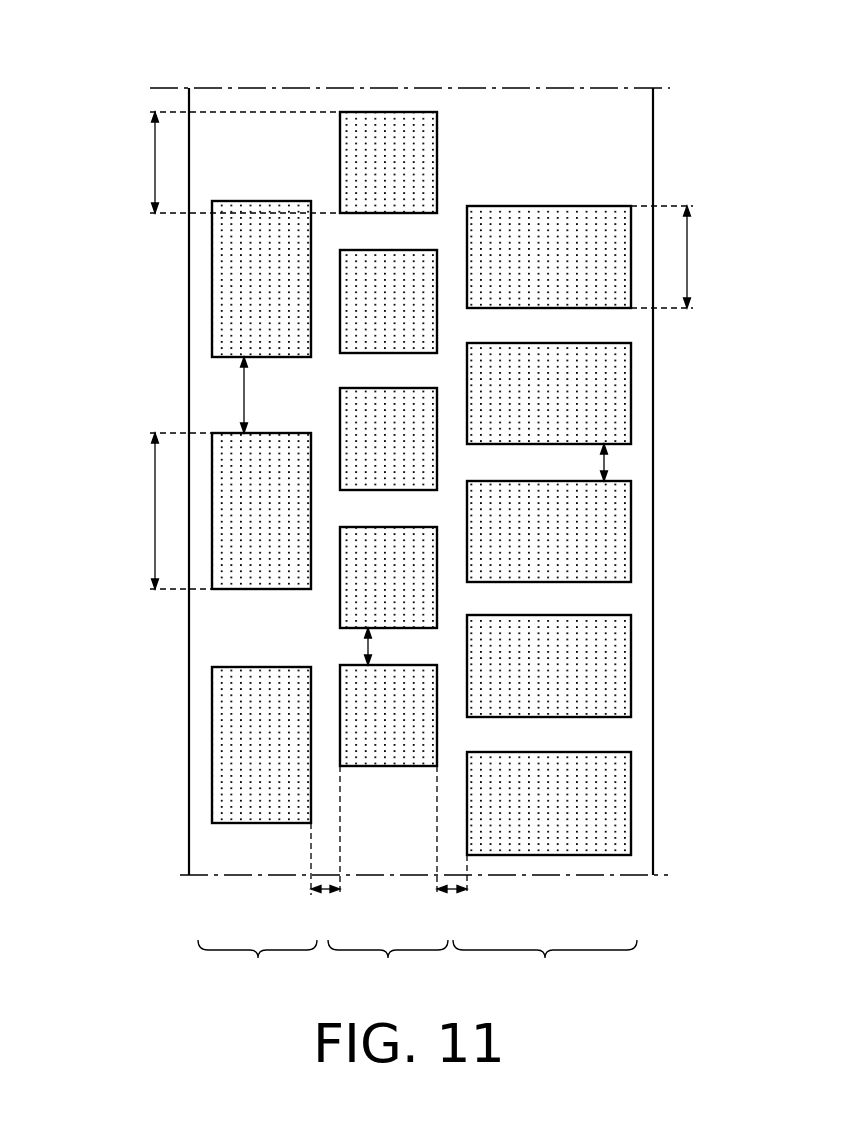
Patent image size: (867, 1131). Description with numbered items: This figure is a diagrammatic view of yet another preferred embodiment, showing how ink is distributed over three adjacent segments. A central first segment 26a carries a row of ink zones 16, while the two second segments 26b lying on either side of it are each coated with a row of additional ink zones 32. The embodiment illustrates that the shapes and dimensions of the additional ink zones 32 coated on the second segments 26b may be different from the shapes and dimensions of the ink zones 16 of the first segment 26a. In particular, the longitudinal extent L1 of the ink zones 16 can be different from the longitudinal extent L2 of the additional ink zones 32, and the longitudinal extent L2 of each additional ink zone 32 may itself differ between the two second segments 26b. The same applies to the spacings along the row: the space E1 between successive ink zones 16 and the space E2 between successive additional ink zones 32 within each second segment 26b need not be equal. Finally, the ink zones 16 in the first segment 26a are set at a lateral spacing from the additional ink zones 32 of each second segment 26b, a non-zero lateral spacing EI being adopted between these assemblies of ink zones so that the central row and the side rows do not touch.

The ink zones 16 is at (372, 128).
The additional ink zones 32 is at (585, 220).
The first segment 26a is at (388, 964).
The second segments 26b is at (417, 964).
The longitudinal extent of the ink zones L1 is at (152, 152).
The longitudinal extent of the additional ink zones L2 is at (152, 512).
The space between the ink zones E1 is at (372, 645).
The space between the additional ink zones E2 is at (243, 392).
The lateral spacing EI is at (324, 891).